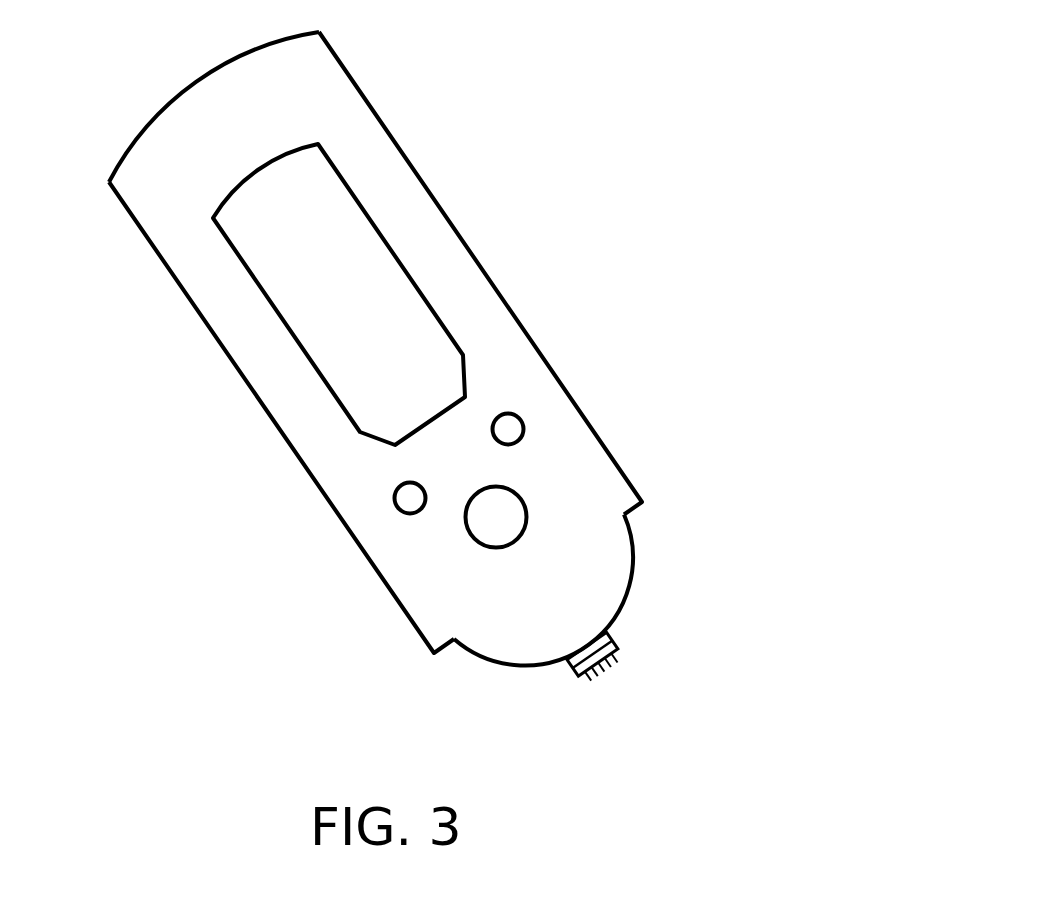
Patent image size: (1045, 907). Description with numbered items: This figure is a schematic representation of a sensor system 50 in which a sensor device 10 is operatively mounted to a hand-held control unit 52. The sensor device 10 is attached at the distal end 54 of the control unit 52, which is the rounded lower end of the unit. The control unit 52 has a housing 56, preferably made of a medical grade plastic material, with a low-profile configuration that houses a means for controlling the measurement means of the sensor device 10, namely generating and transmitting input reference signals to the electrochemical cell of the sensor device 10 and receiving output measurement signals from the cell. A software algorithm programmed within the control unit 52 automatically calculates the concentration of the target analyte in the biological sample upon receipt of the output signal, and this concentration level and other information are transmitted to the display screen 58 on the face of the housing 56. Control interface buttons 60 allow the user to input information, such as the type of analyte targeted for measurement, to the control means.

The sensor device 10 is at (676, 678).
The sensor system 50 is at (428, 367).
The hand-held control unit 52 is at (578, 453).
The distal end 54 is at (593, 590).
The housing 56 is at (370, 100).
The display screen 58 is at (293, 251).
The control interface buttons 60 is at (410, 497).